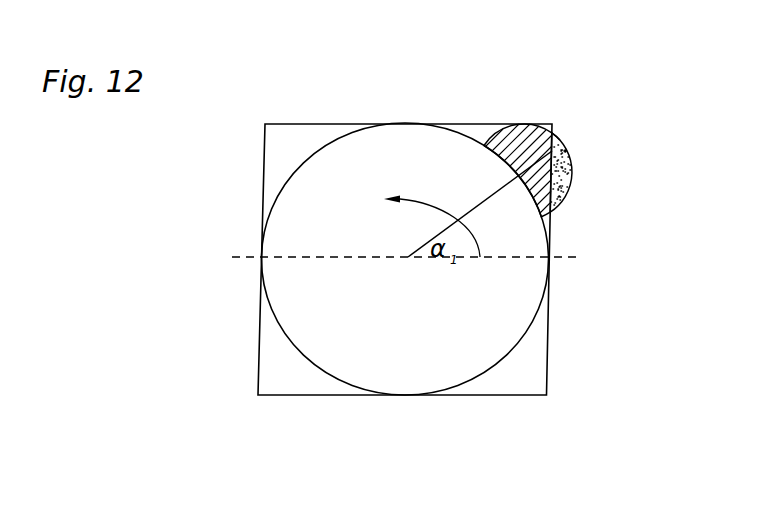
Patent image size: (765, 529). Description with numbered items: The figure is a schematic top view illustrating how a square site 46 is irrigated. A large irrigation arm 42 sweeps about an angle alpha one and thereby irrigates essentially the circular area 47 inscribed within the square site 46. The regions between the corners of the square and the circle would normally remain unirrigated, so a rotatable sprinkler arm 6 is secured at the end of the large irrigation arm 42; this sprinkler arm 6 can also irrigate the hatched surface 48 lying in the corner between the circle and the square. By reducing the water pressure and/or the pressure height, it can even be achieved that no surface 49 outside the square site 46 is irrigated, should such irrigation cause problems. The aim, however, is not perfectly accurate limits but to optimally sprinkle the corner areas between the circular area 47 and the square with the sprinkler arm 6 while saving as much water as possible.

The rotatable sprinkler arm 6 is at (553, 144).
The large irrigation arm 42 is at (470, 210).
The square site 46 is at (548, 355).
The circular area 47 is at (440, 355).
The surface 48 is at (526, 177).
The surface outside the square 49 is at (560, 177).